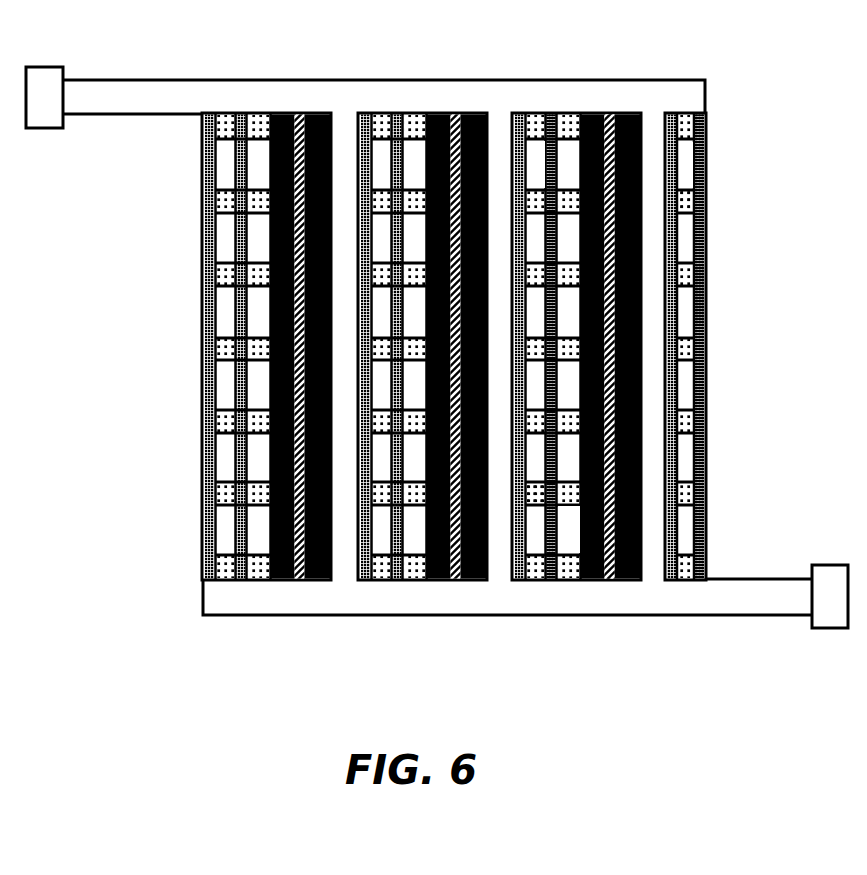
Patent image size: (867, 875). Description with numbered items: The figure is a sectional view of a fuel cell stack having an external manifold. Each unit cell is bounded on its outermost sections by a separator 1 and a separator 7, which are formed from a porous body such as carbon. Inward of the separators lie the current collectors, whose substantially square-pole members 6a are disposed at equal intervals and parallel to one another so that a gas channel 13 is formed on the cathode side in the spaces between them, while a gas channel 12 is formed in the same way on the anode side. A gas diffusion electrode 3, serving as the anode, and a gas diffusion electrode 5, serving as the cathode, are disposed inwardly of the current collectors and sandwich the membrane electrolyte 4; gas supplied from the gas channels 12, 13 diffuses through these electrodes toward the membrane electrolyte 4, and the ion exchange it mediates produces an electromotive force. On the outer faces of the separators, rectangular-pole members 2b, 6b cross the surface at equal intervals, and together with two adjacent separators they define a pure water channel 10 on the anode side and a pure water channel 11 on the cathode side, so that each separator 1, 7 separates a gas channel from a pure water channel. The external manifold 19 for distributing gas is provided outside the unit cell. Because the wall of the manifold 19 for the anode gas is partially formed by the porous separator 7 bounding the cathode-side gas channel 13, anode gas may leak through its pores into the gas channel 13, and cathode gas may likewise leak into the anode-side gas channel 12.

The separator 1 is at (514, 544).
The rectangular-pole members 2b is at (685, 203).
The gas diffusion electrode 3 is at (638, 442).
The membrane electrolyte 4 is at (638, 515).
The gas diffusion electrode 5 is at (606, 544).
The substantially square-pole members 6a is at (695, 293).
The rectangular-pole members 6b is at (532, 500).
The separator 7 is at (549, 150).
The pure water channel 10 is at (685, 162).
The pure water channel 11 is at (533, 158).
The gas channel 12 is at (648, 367).
The gas channel 13 is at (566, 544).
The external manifold 19 is at (588, 92).